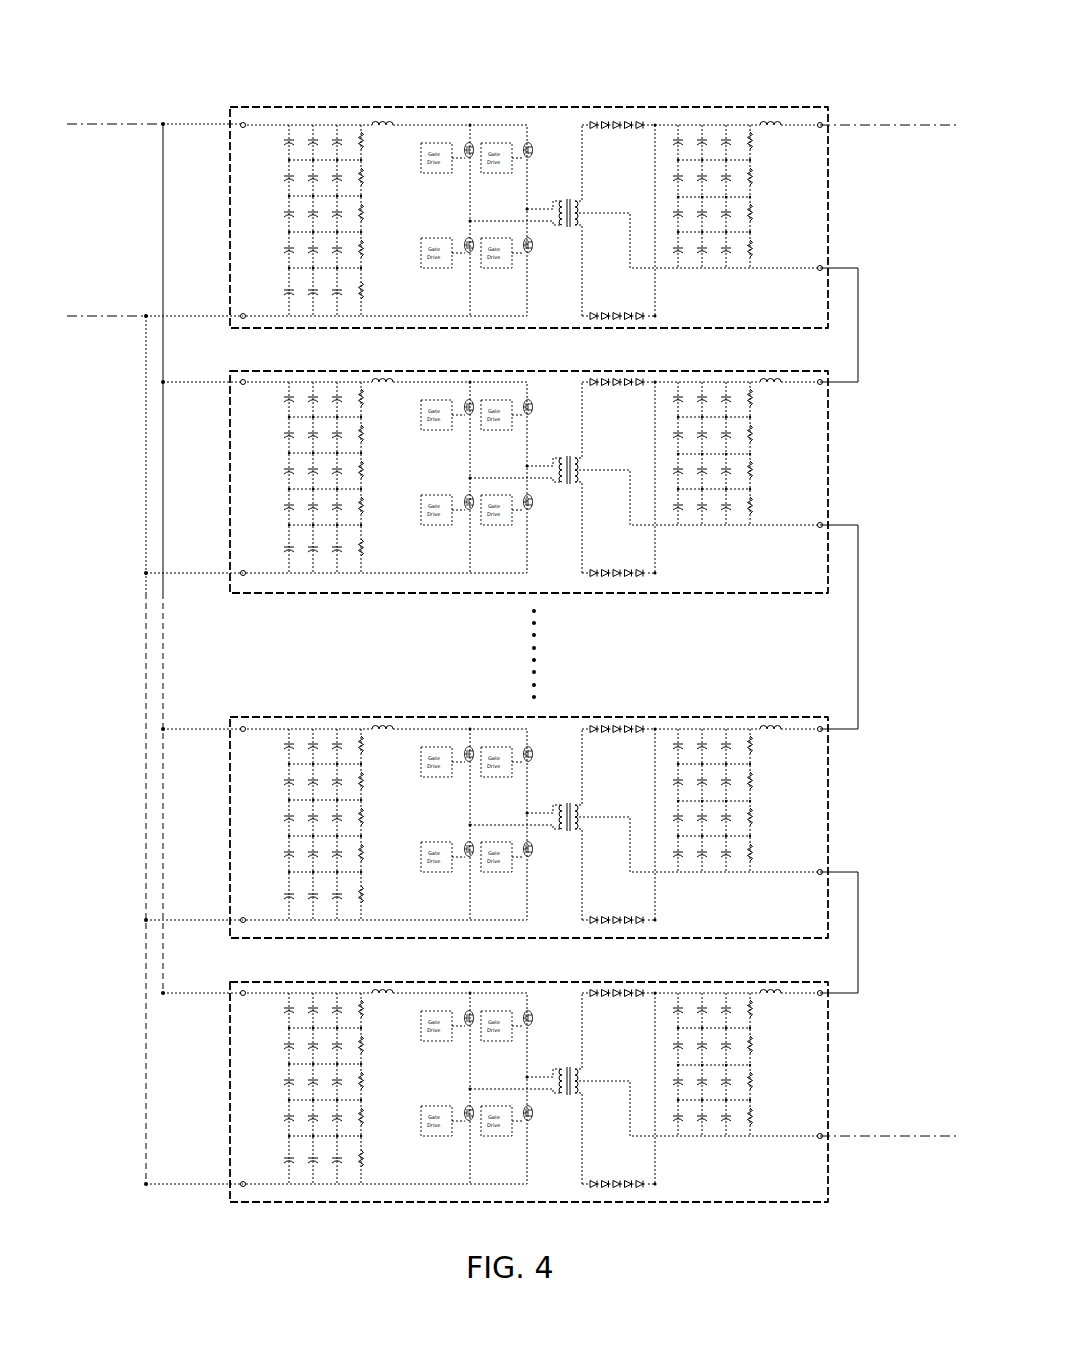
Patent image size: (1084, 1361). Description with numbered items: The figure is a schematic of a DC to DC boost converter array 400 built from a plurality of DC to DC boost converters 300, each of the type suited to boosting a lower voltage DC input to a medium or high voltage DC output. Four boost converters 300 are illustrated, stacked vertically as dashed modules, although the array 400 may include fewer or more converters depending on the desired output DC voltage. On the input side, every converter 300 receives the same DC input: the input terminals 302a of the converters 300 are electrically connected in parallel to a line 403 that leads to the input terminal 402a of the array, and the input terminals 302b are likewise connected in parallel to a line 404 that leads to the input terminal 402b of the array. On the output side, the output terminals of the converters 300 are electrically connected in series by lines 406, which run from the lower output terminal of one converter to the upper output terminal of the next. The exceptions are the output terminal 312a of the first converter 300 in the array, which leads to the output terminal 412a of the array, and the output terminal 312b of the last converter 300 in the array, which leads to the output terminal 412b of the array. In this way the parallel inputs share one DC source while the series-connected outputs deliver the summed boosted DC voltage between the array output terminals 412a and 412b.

The DC to DC boost converter array 400 is at (641, 66).
The DC to DC boost converter 300 is at (263, 107).
The input terminal 302a is at (243, 121).
The input terminal 302b is at (243, 312).
The output terminal 312a is at (822, 121).
The output terminal 312b is at (822, 1140).
The input terminal of the array 402a is at (100, 122).
The input terminal of the array 402b is at (118, 315).
The line 403 is at (160, 487).
The line 404 is at (145, 523).
The lines 406 is at (862, 326).
The output terminal of the array 412a is at (900, 124).
The output terminal of the array 412b is at (900, 1136).